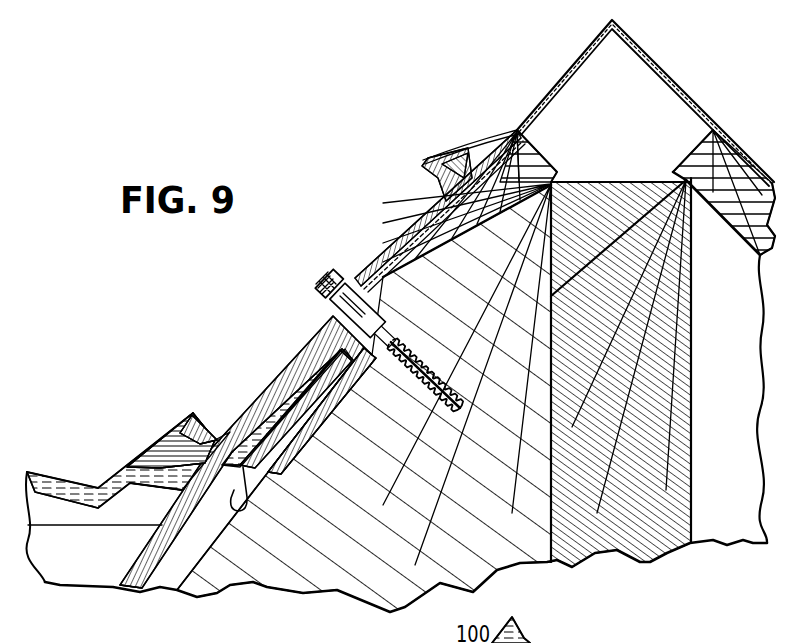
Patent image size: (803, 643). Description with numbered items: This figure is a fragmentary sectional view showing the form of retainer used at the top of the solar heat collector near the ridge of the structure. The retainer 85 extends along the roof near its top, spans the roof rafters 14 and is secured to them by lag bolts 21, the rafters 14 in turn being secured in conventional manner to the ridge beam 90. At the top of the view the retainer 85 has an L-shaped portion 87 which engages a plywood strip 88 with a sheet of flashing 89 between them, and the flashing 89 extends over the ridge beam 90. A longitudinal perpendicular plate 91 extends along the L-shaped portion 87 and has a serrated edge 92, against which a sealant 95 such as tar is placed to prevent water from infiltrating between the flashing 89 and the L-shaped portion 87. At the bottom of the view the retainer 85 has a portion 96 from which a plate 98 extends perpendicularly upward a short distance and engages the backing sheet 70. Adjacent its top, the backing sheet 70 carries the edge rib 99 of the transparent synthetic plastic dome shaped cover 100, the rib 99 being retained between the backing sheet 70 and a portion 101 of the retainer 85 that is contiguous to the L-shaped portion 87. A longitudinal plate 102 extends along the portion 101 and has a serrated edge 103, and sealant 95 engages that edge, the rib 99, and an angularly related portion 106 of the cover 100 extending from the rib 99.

The roof rafters 14 is at (534, 550).
The lag bolts 21 is at (342, 272).
The backing sheet 70 is at (160, 586).
The retainer 85 is at (325, 250).
The L-shaped portion 87 is at (404, 228).
The plywood strip 88 is at (530, 160).
The flashing 89 is at (535, 100).
The ridge beam 90 is at (622, 182).
The perpendicular plate 91 is at (424, 166).
The serrated edge 92 is at (442, 164).
The sealant 95 is at (472, 148).
The portion 96 is at (307, 440).
The plate 98 is at (238, 512).
The edge rib 99 is at (241, 410).
The dome shaped cover 100 is at (84, 457).
The portion 101 is at (275, 366).
The longitudinal plate 102 is at (193, 410).
The serrated edge 103 is at (180, 430).
The angularly related portion 106 is at (155, 482).